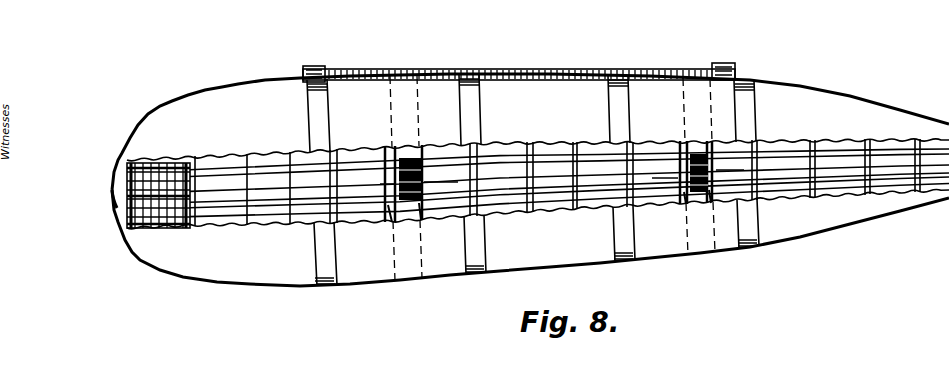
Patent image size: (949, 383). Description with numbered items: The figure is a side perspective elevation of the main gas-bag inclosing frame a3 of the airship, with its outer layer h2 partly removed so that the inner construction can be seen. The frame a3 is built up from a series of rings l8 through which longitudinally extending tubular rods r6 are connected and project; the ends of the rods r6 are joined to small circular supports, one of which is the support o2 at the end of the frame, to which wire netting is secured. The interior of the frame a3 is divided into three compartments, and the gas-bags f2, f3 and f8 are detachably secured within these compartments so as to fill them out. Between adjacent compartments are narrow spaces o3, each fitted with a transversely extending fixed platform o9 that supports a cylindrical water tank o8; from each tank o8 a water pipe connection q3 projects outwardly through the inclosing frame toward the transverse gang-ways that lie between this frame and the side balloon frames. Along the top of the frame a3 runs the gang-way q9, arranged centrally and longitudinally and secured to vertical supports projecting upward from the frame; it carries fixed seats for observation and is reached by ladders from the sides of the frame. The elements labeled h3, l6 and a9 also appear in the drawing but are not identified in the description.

The main gas-bag inclosing frame a3 is at (234, 86).
The small circular support o2 is at (118, 209).
The gang-way q9 is at (534, 68).
The transverse frame rings h3 is at (775, 112).
The outer layer h2 is at (472, 178).
The gas-bag f3 is at (545, 148).
The gas-bag f2 is at (207, 162).
The gas-bag f8 is at (846, 198).
The tubular rod r6 is at (225, 212).
The forward lattice cage l6 is at (177, 223).
The ring l8 is at (305, 67).
The cylindrical water tank o8 is at (690, 152).
The narrow space o3 is at (690, 206).
The fixed platform o9 is at (516, 179).
The water pipe connection q3 is at (584, 177).
The envelope of adjacent figure a9 is at (397, 373).